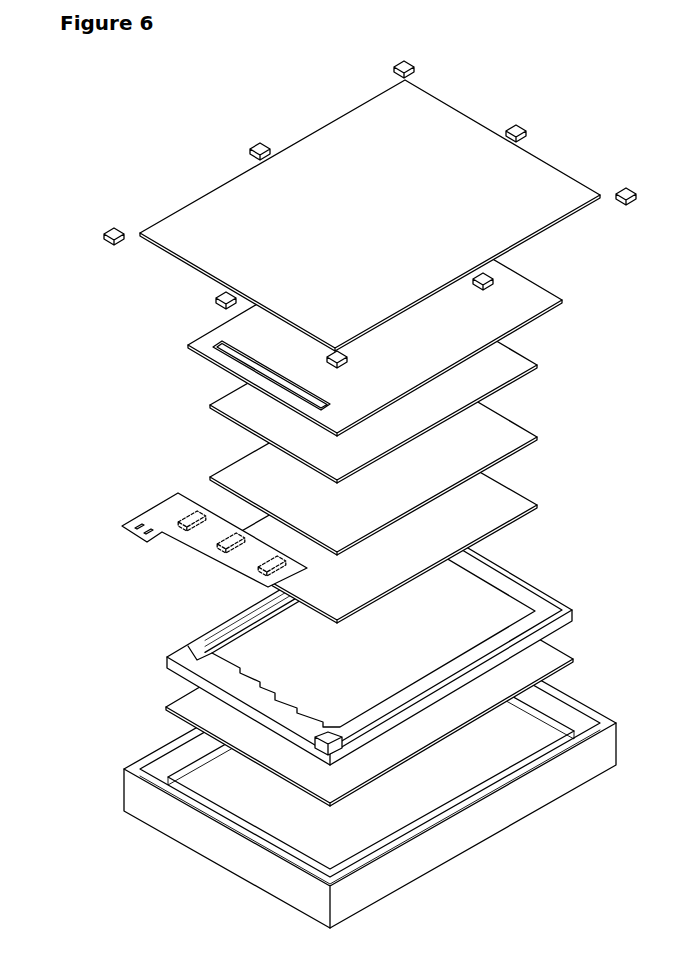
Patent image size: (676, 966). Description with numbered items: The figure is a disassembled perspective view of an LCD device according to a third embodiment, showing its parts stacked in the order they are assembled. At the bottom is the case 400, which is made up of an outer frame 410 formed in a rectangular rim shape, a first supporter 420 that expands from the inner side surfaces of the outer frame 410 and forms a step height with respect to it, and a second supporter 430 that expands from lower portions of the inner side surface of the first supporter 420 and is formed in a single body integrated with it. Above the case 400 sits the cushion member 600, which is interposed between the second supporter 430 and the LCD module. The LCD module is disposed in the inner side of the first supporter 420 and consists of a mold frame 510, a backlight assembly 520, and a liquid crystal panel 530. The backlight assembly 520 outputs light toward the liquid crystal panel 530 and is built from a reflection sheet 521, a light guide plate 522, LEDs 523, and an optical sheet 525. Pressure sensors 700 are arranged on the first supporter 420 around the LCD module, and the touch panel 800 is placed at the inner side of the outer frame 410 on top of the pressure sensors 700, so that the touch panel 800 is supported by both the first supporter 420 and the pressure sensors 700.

The case 400 is at (328, 767).
The outer frame 410 is at (183, 807).
The first supporter 420 is at (238, 823).
The second supporter 430 is at (290, 828).
The mold frame 510 is at (184, 645).
The backlight assembly 520 is at (297, 456).
The reflection sheet 521 is at (267, 598).
The light guide plate 522 is at (230, 466).
The LEDs 523 is at (190, 508).
The optical sheet 525 is at (328, 386).
The liquid crystal panel 530 is at (233, 313).
The cushion member 600 is at (188, 702).
The pressure sensors 700 is at (630, 205).
The touch panel 800 is at (543, 167).